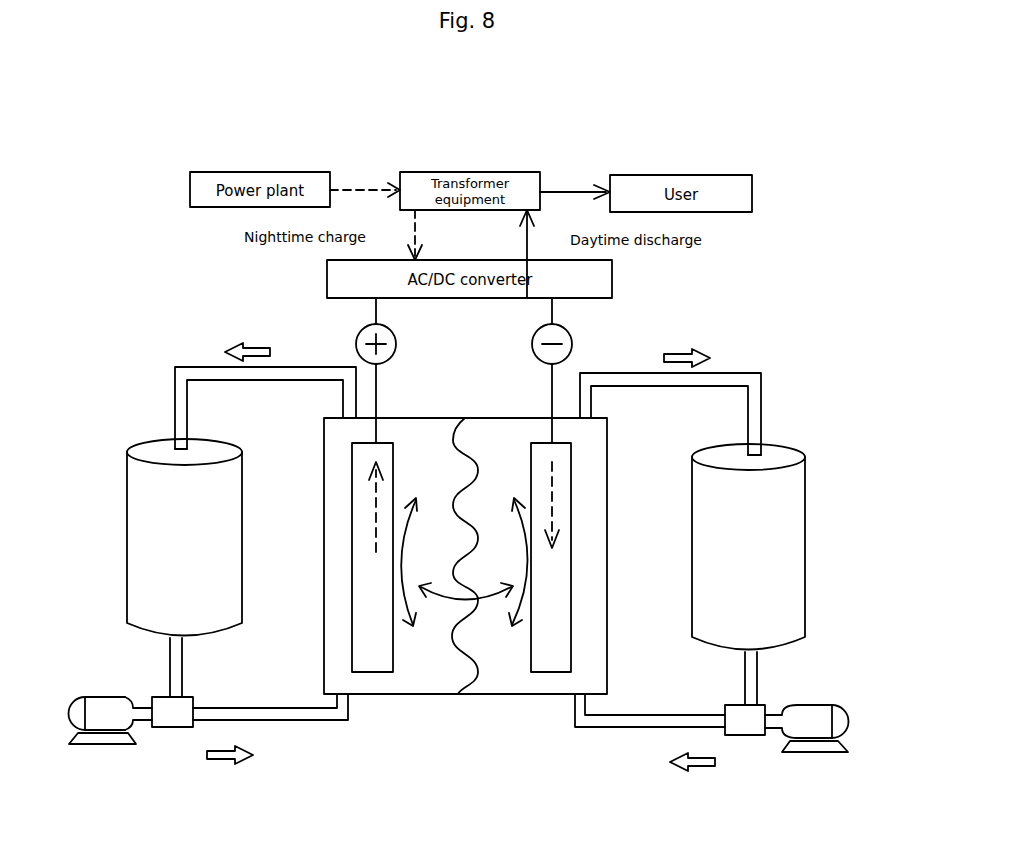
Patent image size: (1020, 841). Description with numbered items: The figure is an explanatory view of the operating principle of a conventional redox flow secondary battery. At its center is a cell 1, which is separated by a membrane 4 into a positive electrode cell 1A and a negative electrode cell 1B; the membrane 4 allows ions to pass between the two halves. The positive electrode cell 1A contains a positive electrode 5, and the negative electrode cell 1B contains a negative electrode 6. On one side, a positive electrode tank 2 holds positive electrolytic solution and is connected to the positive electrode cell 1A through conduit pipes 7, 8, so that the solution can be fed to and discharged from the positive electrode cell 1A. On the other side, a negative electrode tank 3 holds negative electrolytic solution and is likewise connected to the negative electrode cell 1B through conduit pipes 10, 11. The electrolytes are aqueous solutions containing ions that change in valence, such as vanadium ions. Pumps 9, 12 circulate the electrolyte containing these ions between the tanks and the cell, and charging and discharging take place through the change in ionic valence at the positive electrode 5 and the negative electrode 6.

The cell 1 is at (450, 414).
The positive electrode cell 1A is at (408, 694).
The negative electrode cell 1B is at (530, 694).
The positive electrode tank 2 is at (140, 444).
The negative electrode tank 3 is at (790, 453).
The membrane 4 is at (460, 694).
The positive electrode 5 is at (365, 672).
The negative electrode 6 is at (548, 672).
The conduit pipe 7 is at (306, 722).
The conduit pipe 8 is at (203, 367).
The pump 9 is at (110, 745).
The conduit pipe 10 is at (628, 727).
The conduit pipe 11 is at (745, 373).
The pump 12 is at (810, 752).